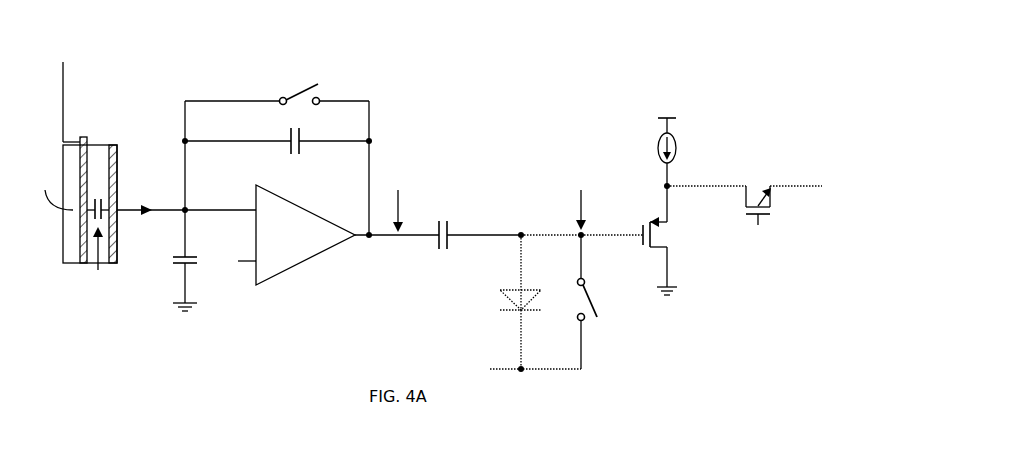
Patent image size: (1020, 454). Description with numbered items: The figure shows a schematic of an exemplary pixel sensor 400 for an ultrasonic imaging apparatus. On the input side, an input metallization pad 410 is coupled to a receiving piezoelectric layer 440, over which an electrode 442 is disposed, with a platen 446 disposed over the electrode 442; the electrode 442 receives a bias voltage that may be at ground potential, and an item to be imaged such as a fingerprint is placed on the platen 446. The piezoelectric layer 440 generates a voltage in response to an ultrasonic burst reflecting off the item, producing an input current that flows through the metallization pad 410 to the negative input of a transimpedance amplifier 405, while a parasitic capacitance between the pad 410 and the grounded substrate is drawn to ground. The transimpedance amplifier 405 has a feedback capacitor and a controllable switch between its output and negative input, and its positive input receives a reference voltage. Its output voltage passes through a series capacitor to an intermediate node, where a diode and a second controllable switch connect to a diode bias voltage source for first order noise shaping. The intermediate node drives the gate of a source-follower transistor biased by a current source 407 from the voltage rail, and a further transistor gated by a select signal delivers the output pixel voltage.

The pixel sensor 400 is at (484, 52).
The transimpedance amplifier 405 is at (307, 268).
The current source 407 is at (658, 150).
The input metallization pad 410 is at (113, 142).
The receiving piezoelectric layer 440 is at (98, 142).
The electrode 442 is at (82, 253).
The platen 446 is at (70, 253).